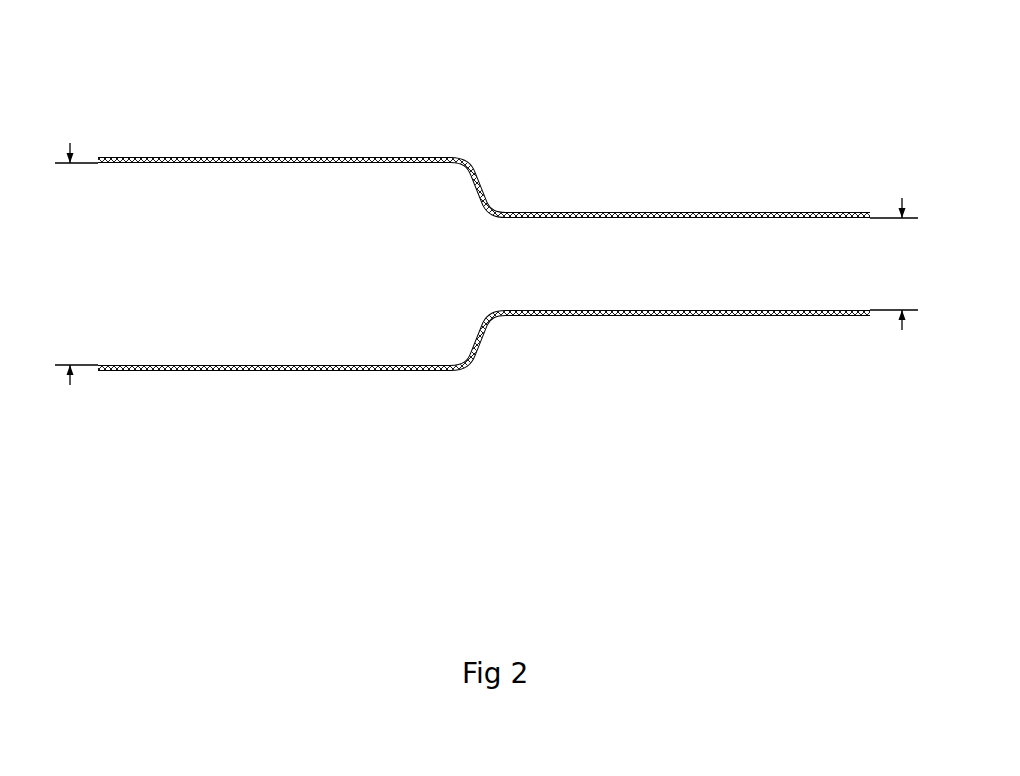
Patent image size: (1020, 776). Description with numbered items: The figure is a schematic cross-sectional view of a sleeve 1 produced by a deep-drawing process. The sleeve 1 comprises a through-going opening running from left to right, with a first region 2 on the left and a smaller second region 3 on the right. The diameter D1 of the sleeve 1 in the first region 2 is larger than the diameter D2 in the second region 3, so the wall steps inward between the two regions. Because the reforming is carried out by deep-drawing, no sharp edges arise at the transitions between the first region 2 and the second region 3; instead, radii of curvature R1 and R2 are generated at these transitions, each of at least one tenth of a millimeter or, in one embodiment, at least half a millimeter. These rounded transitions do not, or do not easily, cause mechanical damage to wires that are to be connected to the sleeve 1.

The sleeve 1 is at (486, 316).
The first region 2 is at (257, 157).
The second region 3 is at (697, 213).
The radius of curvature R1 is at (494, 207).
The radius of curvature R2 is at (478, 162).
The diameter D1 is at (69, 280).
The diameter D2 is at (894, 279).